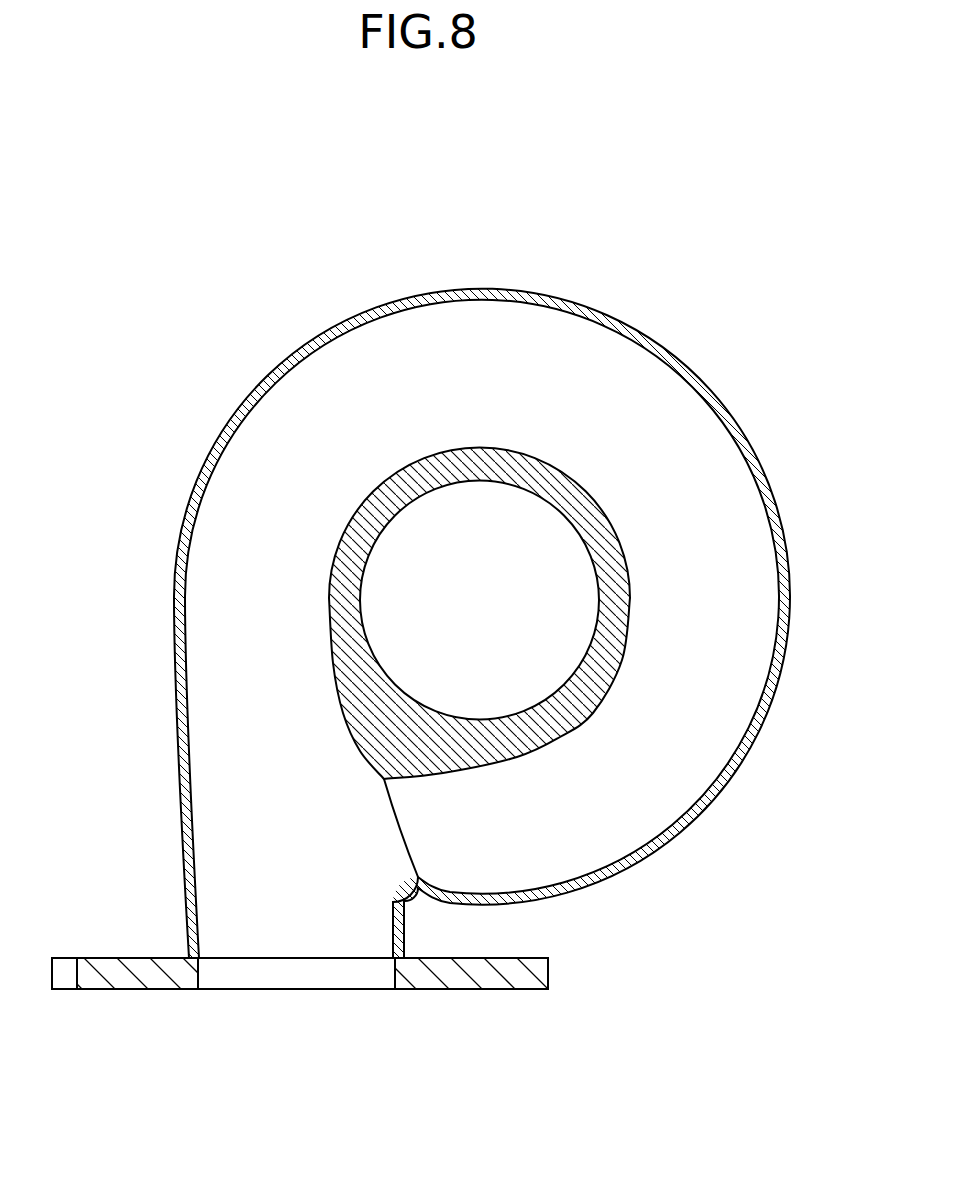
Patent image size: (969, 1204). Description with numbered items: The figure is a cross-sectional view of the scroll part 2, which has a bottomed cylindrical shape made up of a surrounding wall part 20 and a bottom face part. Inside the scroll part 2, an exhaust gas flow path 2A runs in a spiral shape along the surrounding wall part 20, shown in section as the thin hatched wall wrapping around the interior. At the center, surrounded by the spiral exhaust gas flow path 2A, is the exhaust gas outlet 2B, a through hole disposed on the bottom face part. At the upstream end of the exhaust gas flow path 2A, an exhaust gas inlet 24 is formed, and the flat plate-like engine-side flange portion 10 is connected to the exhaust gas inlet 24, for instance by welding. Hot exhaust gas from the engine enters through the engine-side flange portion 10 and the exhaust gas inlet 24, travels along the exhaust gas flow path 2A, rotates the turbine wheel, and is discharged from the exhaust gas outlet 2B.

The scroll part 2 is at (521, 579).
The exhaust gas flow path 2A is at (500, 396).
The exhaust gas outlet 2B is at (502, 608).
The surrounding wall part 20 is at (788, 593).
The exhaust gas inlet 24 is at (285, 958).
The engine-side flange portion 10 is at (299, 1017).